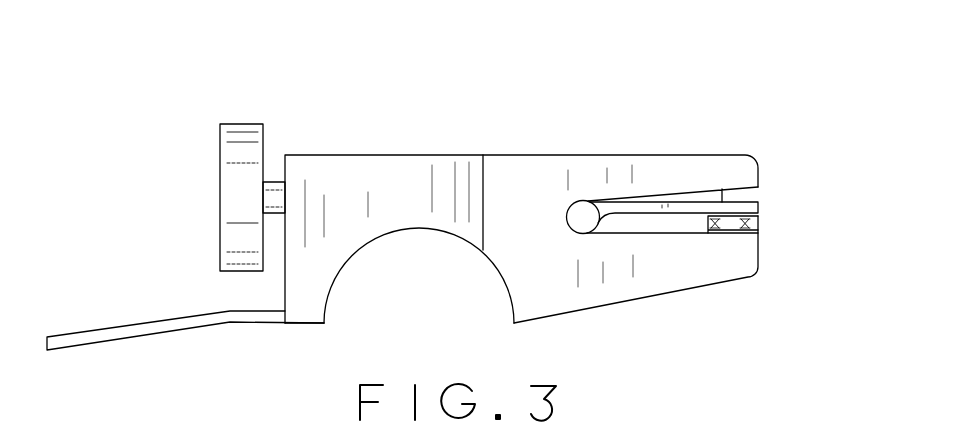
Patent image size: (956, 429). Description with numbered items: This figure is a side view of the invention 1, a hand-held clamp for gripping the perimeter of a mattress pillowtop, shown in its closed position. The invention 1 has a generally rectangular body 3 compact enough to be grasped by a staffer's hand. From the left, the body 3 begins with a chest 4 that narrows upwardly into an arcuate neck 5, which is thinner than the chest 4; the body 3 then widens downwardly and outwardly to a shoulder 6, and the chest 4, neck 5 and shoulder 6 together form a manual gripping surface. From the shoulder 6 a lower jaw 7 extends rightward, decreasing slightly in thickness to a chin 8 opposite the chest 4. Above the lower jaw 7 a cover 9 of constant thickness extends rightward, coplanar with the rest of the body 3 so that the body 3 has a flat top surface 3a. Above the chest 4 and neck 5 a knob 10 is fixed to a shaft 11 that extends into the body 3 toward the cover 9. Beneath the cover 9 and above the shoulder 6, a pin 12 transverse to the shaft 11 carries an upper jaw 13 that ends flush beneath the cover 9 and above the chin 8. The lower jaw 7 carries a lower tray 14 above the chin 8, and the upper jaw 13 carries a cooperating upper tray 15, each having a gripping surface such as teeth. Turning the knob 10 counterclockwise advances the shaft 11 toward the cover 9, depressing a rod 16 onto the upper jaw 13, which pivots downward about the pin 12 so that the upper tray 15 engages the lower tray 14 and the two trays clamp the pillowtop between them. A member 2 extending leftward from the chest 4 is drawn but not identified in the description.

The invention 1 is at (175, 134).
The fastening tab 2 is at (132, 336).
The body 3 is at (340, 138).
The flat top surface 3a is at (402, 154).
The chest 4 is at (308, 310).
The neck 5 is at (378, 235).
The shoulder 6 is at (535, 305).
The lower jaw 7 is at (743, 257).
The chin 8 is at (742, 278).
The cover 9 is at (710, 167).
The knob 10 is at (238, 124).
The shaft 11 is at (272, 182).
The pin 12 is at (584, 212).
The upper jaw 13 is at (745, 208).
The lower tray 14 is at (760, 228).
The upper tray 15 is at (760, 218).
The rod 16 is at (722, 193).